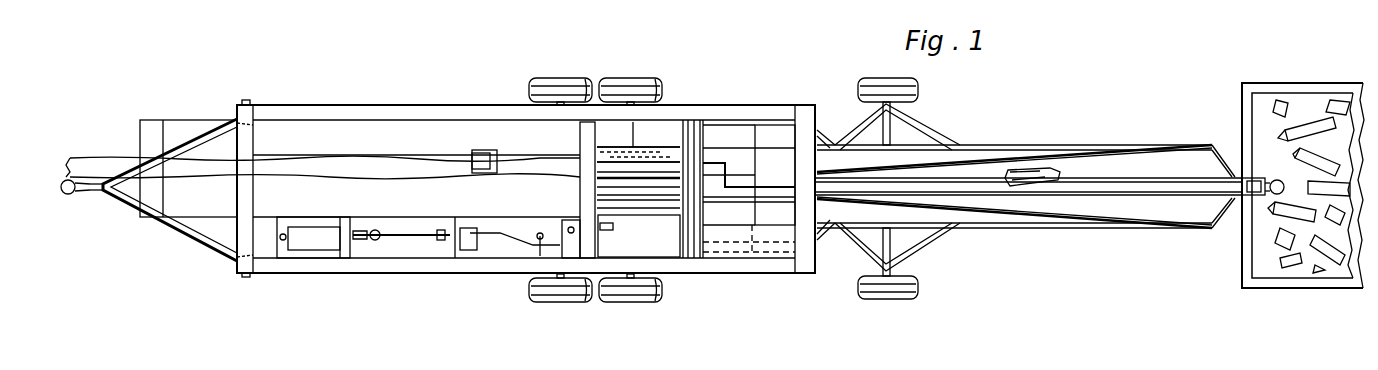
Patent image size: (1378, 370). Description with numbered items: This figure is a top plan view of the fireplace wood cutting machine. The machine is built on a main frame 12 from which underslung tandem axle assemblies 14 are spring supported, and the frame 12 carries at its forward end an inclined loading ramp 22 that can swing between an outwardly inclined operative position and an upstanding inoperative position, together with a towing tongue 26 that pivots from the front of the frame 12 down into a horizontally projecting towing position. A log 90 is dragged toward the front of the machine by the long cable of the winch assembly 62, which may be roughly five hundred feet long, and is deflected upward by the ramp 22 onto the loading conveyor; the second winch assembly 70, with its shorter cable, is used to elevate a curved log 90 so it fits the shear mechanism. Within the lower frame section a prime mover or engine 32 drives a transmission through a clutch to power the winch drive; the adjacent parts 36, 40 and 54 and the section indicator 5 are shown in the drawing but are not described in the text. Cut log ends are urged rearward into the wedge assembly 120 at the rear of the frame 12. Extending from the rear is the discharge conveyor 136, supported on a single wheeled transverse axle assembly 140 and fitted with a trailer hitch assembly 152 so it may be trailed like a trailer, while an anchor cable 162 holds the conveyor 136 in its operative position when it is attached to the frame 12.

The main frame 12 is at (293, 100).
The underslung tandem axle assemblies 14 is at (563, 292).
The inclined loading ramp 22 is at (183, 128).
The towing tongue 26 is at (133, 165).
The log 90 is at (209, 168).
The prime mover or engine 32 is at (320, 237).
The rod 36 is at (400, 240).
The linkage 40 is at (468, 250).
The winch assembly 70 is at (495, 142).
The section line 5 is at (550, 196).
The winch assembly 62 is at (634, 160).
The housing 54 is at (610, 240).
The discharge conveyor 136 is at (1050, 143).
The anchor cable 162 is at (993, 150).
The single wheeled transverse axle assembly 140 is at (888, 302).
The trailer hitch assembly 152 is at (1252, 175).
The wedge assembly 120 is at (1245, 245).